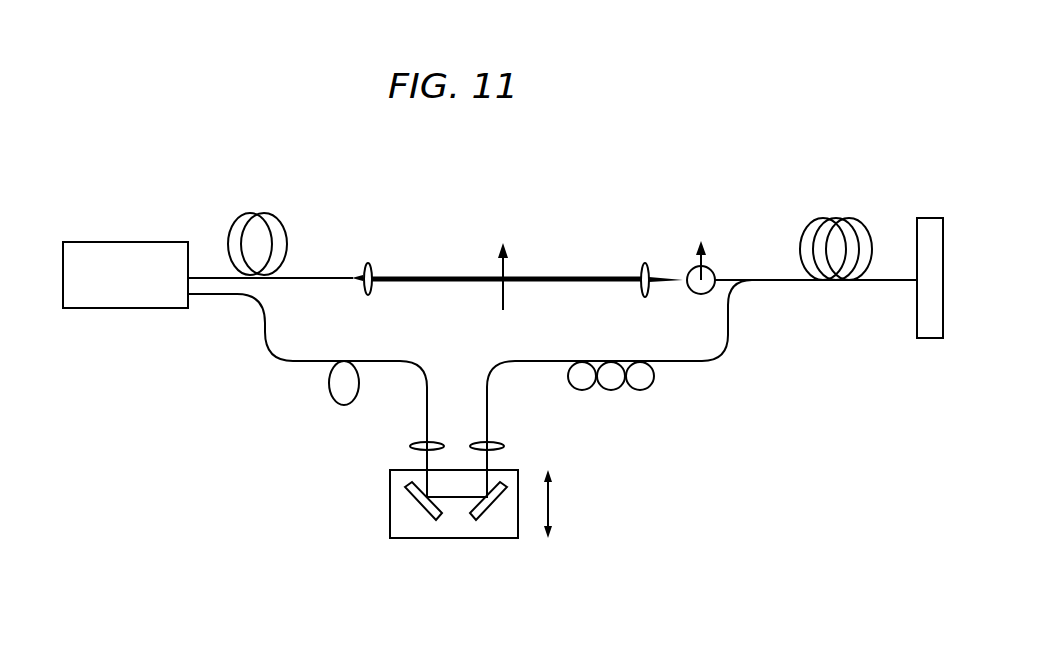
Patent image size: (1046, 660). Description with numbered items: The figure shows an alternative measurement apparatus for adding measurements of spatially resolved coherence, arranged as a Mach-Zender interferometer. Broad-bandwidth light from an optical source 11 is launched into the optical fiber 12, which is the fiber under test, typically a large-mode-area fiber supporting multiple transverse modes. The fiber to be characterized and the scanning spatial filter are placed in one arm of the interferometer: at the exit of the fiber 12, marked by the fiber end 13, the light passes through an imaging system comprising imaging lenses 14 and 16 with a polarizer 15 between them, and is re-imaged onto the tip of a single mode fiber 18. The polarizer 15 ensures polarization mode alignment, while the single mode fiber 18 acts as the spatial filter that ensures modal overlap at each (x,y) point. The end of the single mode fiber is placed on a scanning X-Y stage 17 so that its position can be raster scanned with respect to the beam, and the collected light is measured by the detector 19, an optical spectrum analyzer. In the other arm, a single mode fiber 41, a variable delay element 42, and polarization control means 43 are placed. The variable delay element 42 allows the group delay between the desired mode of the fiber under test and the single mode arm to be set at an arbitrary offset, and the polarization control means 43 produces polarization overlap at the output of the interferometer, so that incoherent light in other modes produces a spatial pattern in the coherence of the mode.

The optical source 11 is at (138, 242).
The optical fiber 12 is at (276, 213).
The fiber end 13 is at (358, 274).
The imaging lens 14 is at (374, 264).
The polarizer 15 is at (505, 248).
The imaging lens 16 is at (642, 264).
The scanning X-Y stage 17 is at (712, 268).
The single mode fiber 18 is at (876, 285).
The detector 19 is at (926, 216).
The single mode fiber 41 is at (334, 402).
The variable delay element 42 is at (461, 540).
The polarization control means 43 is at (608, 392).